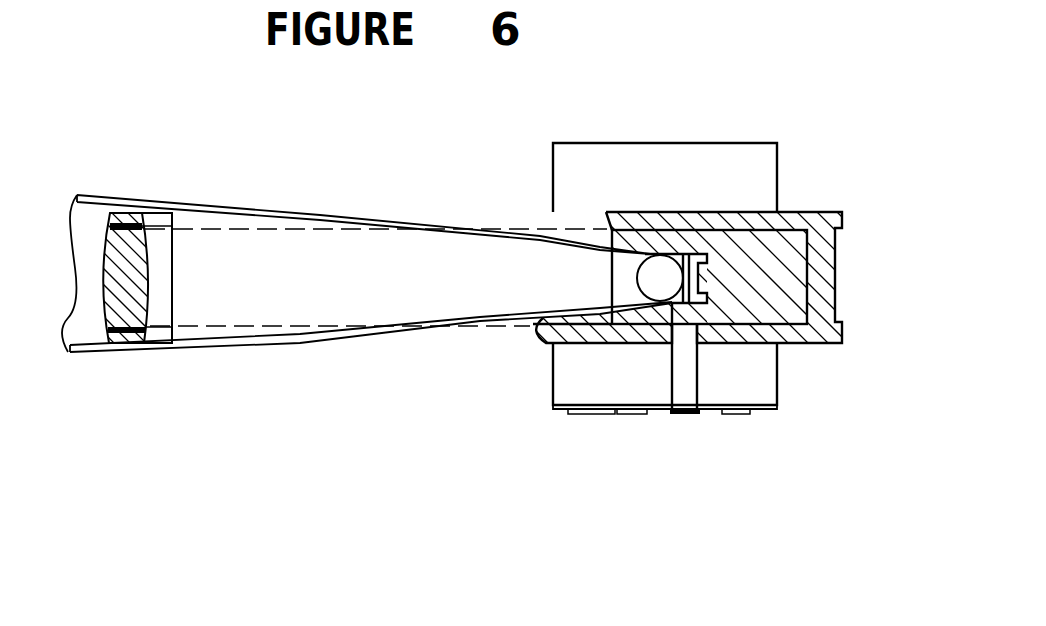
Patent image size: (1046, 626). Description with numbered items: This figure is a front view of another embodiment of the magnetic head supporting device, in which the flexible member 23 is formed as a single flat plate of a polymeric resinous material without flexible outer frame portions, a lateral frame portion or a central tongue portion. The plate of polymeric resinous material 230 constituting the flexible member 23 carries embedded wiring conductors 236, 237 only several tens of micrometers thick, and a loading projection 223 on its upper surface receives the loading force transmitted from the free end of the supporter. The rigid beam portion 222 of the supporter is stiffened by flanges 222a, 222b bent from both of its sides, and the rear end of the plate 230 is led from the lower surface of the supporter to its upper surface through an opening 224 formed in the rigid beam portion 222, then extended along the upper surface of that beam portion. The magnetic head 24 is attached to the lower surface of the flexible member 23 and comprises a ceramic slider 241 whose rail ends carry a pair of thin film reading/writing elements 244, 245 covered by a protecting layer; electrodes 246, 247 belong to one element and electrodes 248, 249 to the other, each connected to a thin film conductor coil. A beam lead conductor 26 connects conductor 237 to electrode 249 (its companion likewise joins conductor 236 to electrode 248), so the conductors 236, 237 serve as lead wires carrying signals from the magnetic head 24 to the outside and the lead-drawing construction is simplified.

The flexible member 23 is at (842, 262).
The magnetic head 24 is at (547, 414).
The beam lead conductor 26 is at (672, 353).
The rigid beam portion 222 is at (86, 330).
The flange 222a is at (113, 196).
The flange 222b is at (224, 343).
The loading projection 223 is at (637, 272).
The opening 224 is at (160, 289).
The plate of polymeric resinous material 230 is at (124, 293).
The conductor 236 is at (129, 222).
The conductor 237 is at (127, 345).
The slider 241 is at (637, 160).
The reading/writing element 244 is at (570, 416).
The reading/writing element 245 is at (745, 417).
The electrode 246 is at (637, 444).
The electrode 247 is at (623, 413).
The electrode 248 is at (745, 464).
The electrode 249 is at (717, 415).